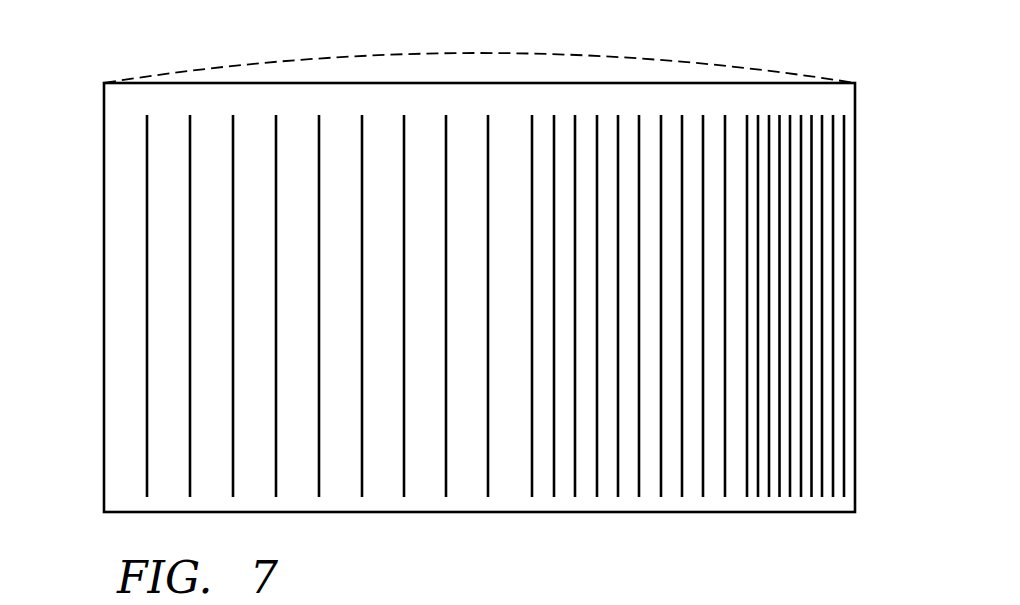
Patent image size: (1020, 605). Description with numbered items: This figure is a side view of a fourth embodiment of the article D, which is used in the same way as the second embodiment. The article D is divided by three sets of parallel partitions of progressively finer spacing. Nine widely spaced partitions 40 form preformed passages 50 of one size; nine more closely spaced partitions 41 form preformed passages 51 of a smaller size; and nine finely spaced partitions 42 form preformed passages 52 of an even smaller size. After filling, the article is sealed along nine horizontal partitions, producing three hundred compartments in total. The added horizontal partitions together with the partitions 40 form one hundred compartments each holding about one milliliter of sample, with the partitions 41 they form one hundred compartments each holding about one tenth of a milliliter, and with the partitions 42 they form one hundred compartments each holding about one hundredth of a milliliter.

The article D is at (322, 48).
The partitions 40 is at (146, 251).
The partitions 41 is at (533, 463).
The partitions 42 is at (845, 414).
The preformed passages 50 is at (130, 368).
The preformed passages 51 is at (628, 473).
The preformed passages 52 is at (798, 487).